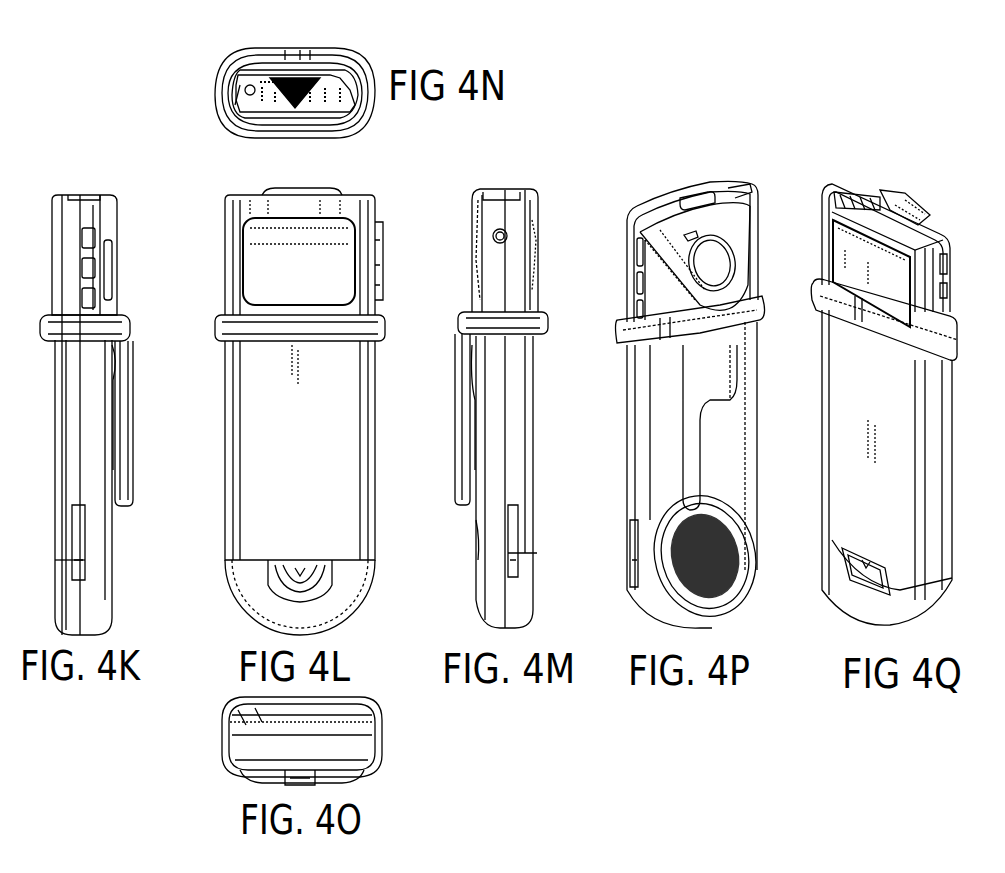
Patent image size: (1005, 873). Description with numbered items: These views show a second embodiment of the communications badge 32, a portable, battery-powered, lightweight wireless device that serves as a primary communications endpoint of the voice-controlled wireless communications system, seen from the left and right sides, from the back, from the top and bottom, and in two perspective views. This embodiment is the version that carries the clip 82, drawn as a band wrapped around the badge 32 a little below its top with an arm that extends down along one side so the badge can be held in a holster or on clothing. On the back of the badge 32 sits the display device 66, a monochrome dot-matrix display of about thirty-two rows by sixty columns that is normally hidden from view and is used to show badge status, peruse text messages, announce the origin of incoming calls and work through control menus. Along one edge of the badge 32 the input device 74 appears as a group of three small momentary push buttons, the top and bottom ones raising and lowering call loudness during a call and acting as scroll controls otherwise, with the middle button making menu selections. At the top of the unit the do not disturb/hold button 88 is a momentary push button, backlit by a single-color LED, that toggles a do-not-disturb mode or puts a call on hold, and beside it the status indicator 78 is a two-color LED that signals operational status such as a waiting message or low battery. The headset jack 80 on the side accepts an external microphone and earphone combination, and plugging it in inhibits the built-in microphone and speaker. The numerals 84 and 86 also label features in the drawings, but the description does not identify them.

In FIG. 4K, the badge device 32 is at (115, 218).
In FIG. 4L, the badge device 32 is at (372, 200).
In FIG. 4N, the badge device 32 is at (222, 100).
In FIG. 4O, the badge device 32 is at (224, 720).
In FIG. 4M, the badge device 32 is at (536, 200).
In FIG. 4P, the badge device 32 is at (633, 215).
In FIG. 4Q, the badge device 32 is at (950, 228).
In FIG. 4L, the display device 66 is at (260, 272).
In FIG. 4M, the display device 66 is at (540, 258).
In FIG. 4Q, the display device 66 is at (838, 274).
In FIG. 4K, the input device 74 is at (112, 272).
In FIG. 4L, the input device 74 is at (383, 265).
In FIG. 4P, the input device 74 is at (637, 265).
In FIG. 4Q, the input device 74 is at (950, 280).
In FIG. 4N, the status indicator 78 is at (245, 68).
In FIG. 4P, the status indicator 78 is at (740, 190).
In FIG. 4Q, the status indicator 78 is at (858, 190).
In FIG. 4M, the headset jack 80 is at (493, 228).
In FIG. 4K, the clip 82 is at (133, 395).
In FIG. 4L, the clip 82 is at (216, 327).
In FIG. 4M, the clip 82 is at (458, 323).
In FIG. 4P, the clip 82 is at (625, 332).
In FIG. 4Q, the clip 82 is at (822, 310).
In FIG. 4P, the button 84 is at (688, 233).
In FIG. 4K, the speaker 86 is at (117, 570).
In FIG. 4L, the speaker 86 is at (300, 581).
In FIG. 4M, the speaker 86 is at (474, 565).
In FIG. 4P, the speaker 86 is at (740, 572).
In FIG. 4Q, the speaker 86 is at (892, 567).
In FIG. 4K, the do not disturb/hold button 88 is at (93, 194).
In FIG. 4L, the do not disturb/hold button 88 is at (280, 193).
In FIG. 4N, the do not disturb/hold button 88 is at (358, 68).
In FIG. 4M, the do not disturb/hold button 88 is at (500, 190).
In FIG. 4P, the do not disturb/hold button 88 is at (702, 192).
In FIG. 4Q, the do not disturb/hold button 88 is at (898, 196).